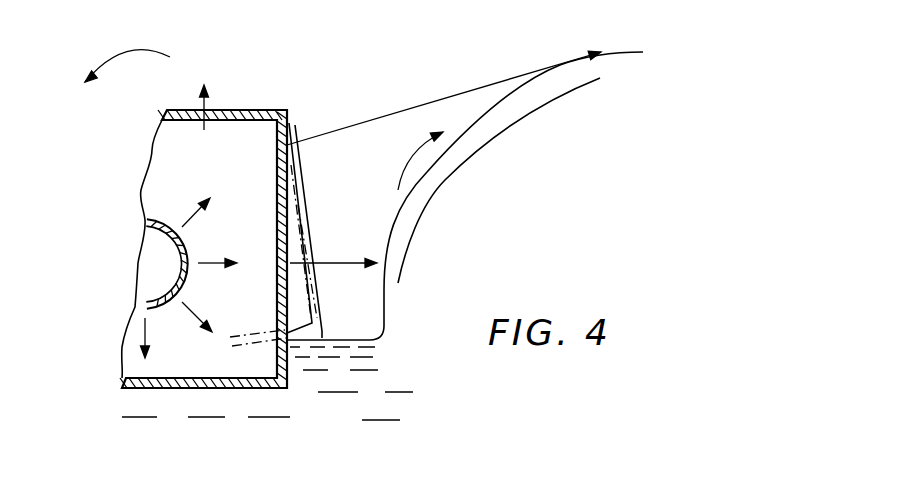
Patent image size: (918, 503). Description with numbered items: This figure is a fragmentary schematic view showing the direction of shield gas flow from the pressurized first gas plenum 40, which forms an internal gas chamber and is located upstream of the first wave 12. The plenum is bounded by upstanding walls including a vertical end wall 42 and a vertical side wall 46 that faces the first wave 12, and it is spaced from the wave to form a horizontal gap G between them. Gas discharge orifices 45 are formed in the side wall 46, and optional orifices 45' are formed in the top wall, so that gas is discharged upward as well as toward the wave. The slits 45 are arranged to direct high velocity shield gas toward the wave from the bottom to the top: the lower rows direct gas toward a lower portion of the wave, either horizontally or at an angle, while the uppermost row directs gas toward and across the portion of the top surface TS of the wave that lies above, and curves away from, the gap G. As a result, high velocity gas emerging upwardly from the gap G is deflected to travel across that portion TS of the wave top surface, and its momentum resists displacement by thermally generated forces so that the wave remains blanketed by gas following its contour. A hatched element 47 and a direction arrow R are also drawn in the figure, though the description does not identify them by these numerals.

The first wave 12 is at (513, 96).
The first gas plenum 40 is at (254, 110).
The vertical end wall 42 is at (290, 353).
The orifices 45 is at (325, 208).
The orifices in the top wall 45' is at (205, 82).
The side wall 46 is at (290, 215).
The heating tube 47 is at (143, 280).
The horizontal gap G is at (390, 113).
The top surface TS is at (622, 54).
The rotation direction R is at (128, 48).